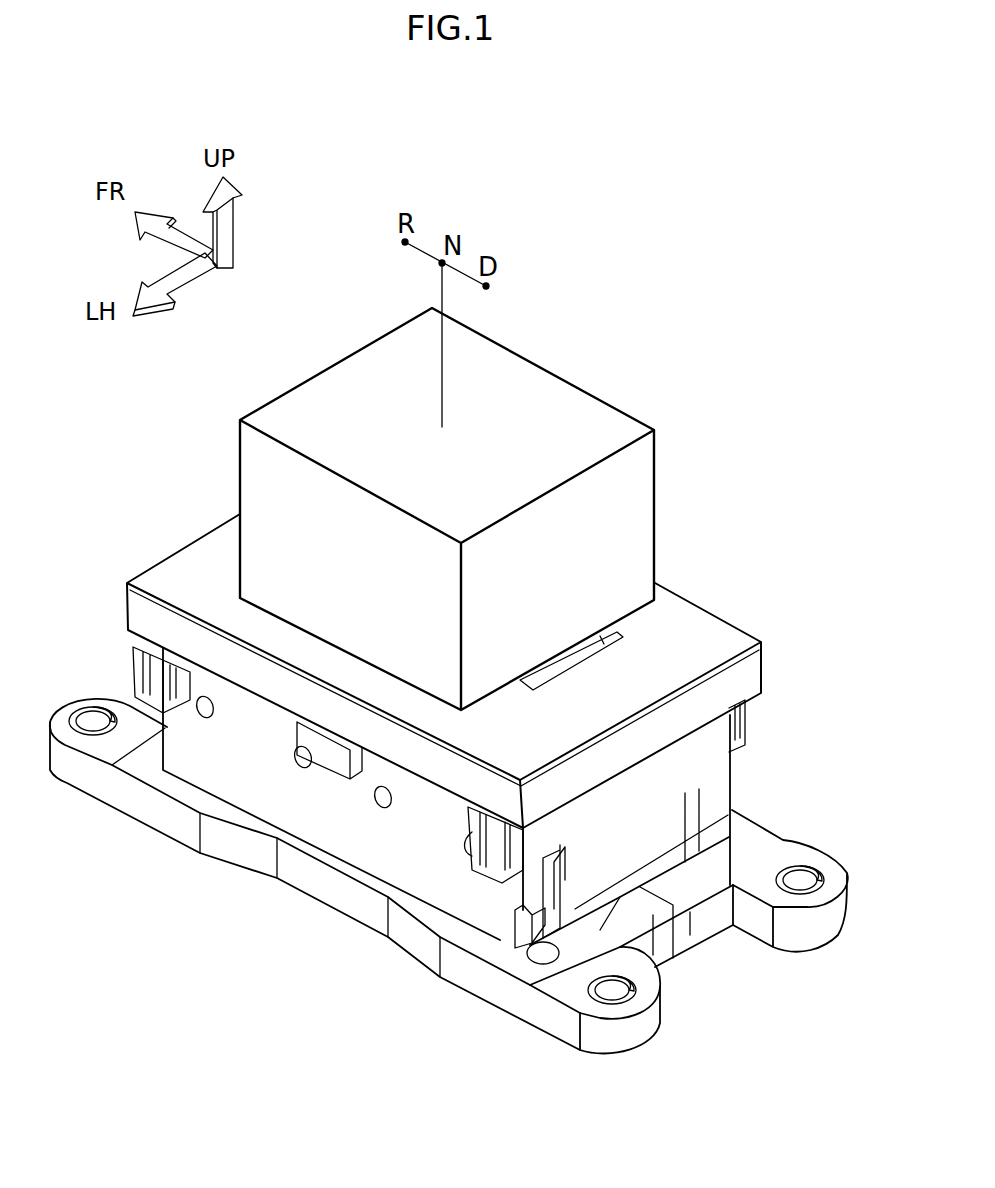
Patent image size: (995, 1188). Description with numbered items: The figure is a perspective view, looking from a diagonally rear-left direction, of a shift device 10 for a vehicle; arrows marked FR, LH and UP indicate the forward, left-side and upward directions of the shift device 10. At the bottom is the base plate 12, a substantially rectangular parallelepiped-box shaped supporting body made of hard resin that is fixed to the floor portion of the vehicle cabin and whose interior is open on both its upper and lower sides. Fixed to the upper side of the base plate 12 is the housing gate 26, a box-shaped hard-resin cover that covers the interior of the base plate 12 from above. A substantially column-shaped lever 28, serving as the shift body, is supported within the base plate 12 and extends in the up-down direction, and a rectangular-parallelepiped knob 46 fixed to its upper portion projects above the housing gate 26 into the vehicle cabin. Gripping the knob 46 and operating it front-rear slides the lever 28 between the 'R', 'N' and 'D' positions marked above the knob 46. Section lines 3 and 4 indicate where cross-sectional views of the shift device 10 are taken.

The shift device 10 is at (655, 312).
The base plate 12 is at (729, 780).
The housing gate 26 is at (710, 608).
The lever 28 is at (447, 509).
The knob 46 is at (657, 475).
The line 3- 3 is at (283, 523).
The line 4- 4 is at (373, 567).